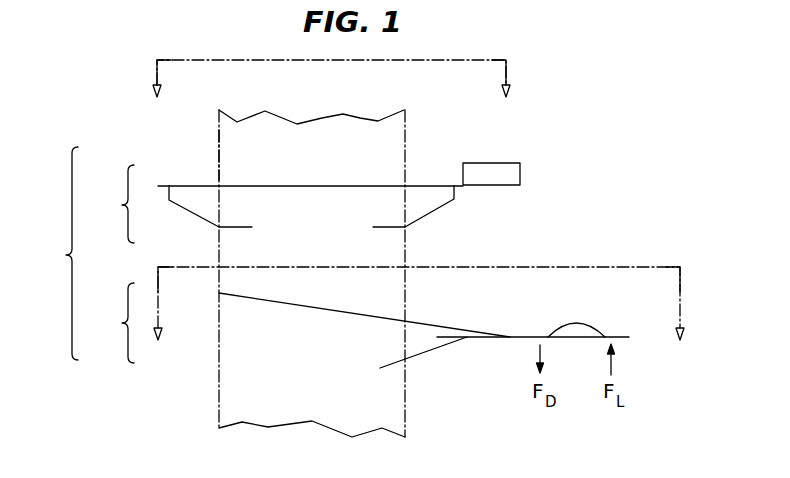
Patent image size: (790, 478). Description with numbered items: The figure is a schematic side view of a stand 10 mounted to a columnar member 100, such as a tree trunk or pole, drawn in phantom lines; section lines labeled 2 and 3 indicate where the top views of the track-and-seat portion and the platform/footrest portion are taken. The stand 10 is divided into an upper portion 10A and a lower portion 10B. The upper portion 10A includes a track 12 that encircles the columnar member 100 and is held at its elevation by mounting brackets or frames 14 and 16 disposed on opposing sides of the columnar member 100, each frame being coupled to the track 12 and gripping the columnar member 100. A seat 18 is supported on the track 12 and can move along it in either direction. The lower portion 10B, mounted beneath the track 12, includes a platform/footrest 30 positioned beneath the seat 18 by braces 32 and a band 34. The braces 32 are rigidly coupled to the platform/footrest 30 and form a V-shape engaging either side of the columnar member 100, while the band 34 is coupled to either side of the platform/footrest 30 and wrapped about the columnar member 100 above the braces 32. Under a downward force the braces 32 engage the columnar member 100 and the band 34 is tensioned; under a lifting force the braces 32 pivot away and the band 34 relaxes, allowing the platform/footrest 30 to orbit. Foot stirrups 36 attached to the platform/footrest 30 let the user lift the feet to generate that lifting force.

The section line 2- 2 is at (332, 91).
The section line 3- 3 is at (419, 317).
The stand 10 is at (61, 253).
The upper portion 10A is at (112, 204).
The lower portion 10B is at (112, 323).
The columnar member 100 is at (219, 157).
The track 12 is at (425, 184).
The mounting bracket or frame 14 is at (432, 212).
The mounting bracket or frame 16 is at (190, 213).
The seat 18 is at (520, 172).
The platform/footrest 30 is at (615, 337).
The braces 32 is at (422, 353).
The band 34 is at (425, 324).
The foot stirrups 36 is at (578, 323).